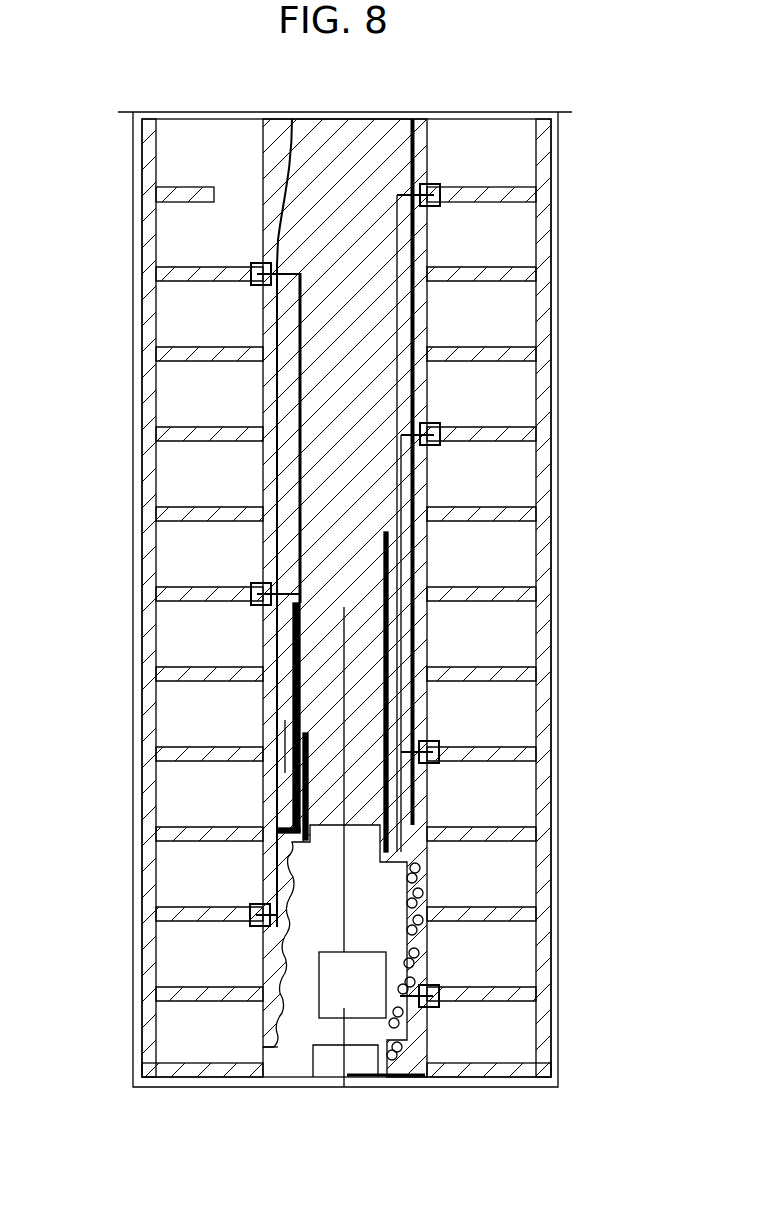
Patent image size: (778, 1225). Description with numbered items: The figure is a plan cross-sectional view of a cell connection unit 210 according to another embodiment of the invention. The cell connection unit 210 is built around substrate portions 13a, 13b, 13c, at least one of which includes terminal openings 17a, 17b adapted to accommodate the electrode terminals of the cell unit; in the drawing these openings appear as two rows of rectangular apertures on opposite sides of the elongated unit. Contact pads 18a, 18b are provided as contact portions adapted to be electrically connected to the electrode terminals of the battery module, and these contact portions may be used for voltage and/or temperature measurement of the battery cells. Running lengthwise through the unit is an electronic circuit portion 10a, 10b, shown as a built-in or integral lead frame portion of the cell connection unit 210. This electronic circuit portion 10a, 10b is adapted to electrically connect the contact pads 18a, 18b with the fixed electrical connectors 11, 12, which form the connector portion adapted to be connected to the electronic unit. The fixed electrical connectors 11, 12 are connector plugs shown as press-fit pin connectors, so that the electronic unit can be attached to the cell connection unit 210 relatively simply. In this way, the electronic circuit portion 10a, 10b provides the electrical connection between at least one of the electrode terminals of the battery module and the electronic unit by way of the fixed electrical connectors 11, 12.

The cell connection unit 210 is at (612, 395).
The electronic circuit portion 10a is at (424, 709).
The electronic circuit portion 10b is at (286, 812).
The fixed electrical connector 11 is at (393, 876).
The fixed electrical connector 12 is at (319, 849).
The substrate portion 13a is at (410, 1078).
The substrate portion 13b is at (280, 1078).
The substrate portion 13c is at (363, 794).
The terminal opening 17a is at (517, 1035).
The terminal opening 17b is at (202, 1047).
The contact pad 18a is at (440, 752).
The contact pad 18b is at (250, 913).